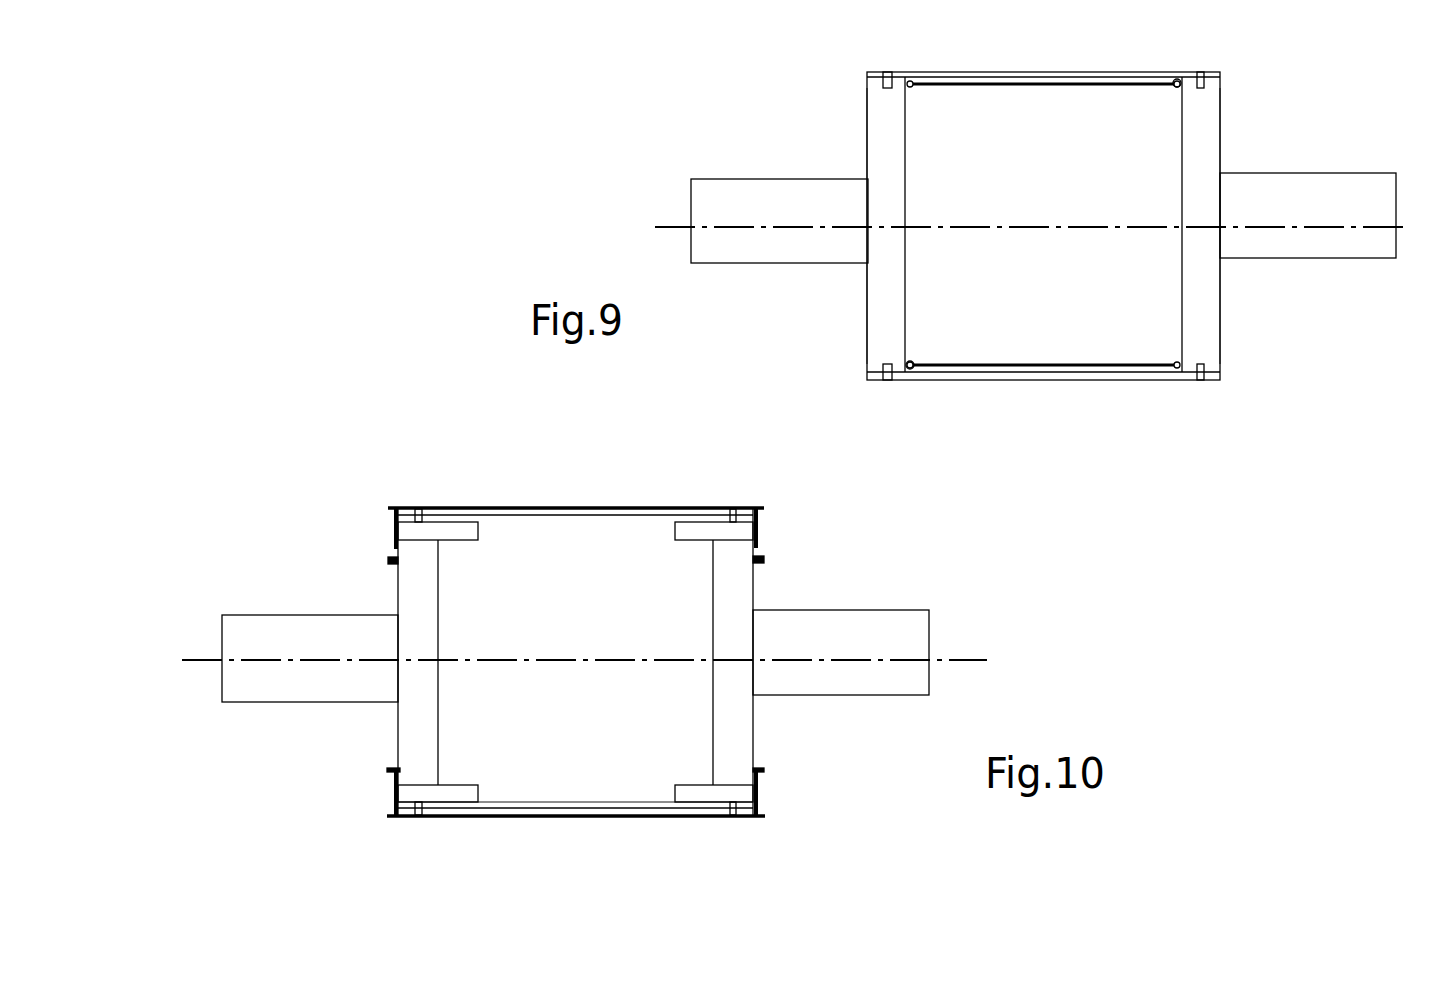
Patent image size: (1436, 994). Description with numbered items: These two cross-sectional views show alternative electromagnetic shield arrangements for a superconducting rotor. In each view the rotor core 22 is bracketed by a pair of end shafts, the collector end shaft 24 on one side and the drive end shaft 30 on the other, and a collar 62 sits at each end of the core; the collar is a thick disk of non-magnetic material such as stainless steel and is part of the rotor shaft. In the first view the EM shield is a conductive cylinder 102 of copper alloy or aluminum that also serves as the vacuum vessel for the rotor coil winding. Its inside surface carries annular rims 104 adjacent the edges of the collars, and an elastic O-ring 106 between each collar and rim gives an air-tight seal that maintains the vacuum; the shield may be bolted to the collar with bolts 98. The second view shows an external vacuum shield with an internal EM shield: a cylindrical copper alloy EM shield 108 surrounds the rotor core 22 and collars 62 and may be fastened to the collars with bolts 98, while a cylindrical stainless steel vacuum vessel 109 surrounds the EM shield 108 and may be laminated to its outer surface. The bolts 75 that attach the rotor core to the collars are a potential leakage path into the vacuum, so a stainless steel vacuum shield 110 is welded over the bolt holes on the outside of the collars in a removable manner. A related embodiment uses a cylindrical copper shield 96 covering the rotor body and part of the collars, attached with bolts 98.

In FIG. 9, the rotor core 22 is at (1048, 125).
In FIG. 10, the rotor core 22 is at (580, 586).
In FIG. 9, the collector end shaft 24 is at (776, 265).
In FIG. 10, the collector end shaft 24 is at (292, 703).
In FIG. 9, the drive end shaft 30 is at (1296, 260).
In FIG. 10, the drive end shaft 30 is at (823, 697).
In FIG. 9, the collar 62 is at (866, 125).
In FIG. 10, the collar 62 is at (398, 595).
In FIG. 10, the bolts 75 is at (458, 535).
In FIG. 10, the cylindrical copper shield 96 is at (672, 820).
In FIG. 9, the bolts 98 is at (1202, 73).
In FIG. 10, the bolts 98 is at (734, 516).
In FIG. 9, the conductive cylinder 102 is at (1018, 380).
In FIG. 9, the annular rims 104 is at (912, 84).
In FIG. 9, the elastic O-ring 106 is at (1175, 82).
In FIG. 10, the cylindrical copper alloy EM shield 108 is at (586, 517).
In FIG. 10, the cylindrical stainless steel vacuum vessel 109 is at (539, 510).
In FIG. 10, the stainless steel vacuum shield 110 is at (392, 525).